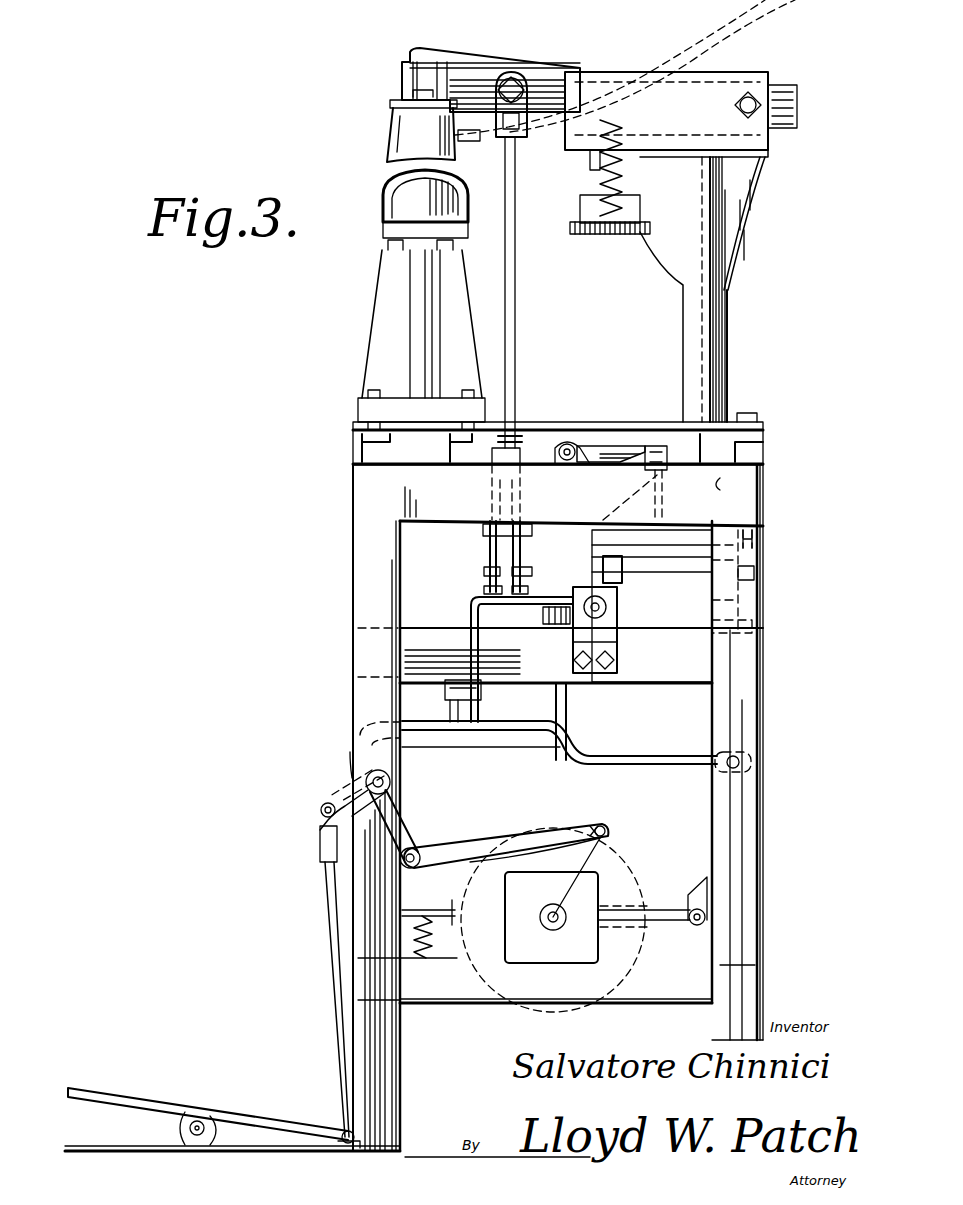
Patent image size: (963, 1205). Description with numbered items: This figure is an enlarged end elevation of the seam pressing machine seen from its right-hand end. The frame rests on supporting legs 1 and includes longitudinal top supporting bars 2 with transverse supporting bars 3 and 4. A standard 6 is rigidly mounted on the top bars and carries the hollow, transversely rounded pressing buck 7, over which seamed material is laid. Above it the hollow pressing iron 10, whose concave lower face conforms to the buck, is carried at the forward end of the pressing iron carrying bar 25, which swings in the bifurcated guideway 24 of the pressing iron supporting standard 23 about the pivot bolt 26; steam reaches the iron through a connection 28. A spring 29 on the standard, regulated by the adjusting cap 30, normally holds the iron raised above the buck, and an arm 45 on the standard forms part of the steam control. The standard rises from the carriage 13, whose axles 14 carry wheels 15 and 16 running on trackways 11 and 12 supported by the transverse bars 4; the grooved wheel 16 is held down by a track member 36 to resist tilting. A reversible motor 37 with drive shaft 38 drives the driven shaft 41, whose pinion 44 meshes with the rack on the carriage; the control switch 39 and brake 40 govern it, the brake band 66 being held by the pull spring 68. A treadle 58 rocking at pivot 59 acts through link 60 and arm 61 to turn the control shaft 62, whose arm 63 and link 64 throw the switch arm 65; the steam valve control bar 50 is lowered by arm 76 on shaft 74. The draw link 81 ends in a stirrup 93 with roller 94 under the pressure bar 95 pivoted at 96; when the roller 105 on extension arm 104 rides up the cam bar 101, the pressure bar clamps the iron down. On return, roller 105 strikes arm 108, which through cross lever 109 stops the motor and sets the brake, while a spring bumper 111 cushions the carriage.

The supporting legs 1 is at (365, 556).
The top supporting bars 2 is at (360, 450).
The transverse supporting bar 3 is at (722, 480).
The transverse supporting bar 4 is at (688, 686).
The standard 6 is at (382, 315).
The pressing buck 7 is at (395, 195).
The pressing iron 10 is at (400, 142).
The trackway 11 is at (618, 630).
The trackway 12 is at (757, 620).
The carriage 13 is at (690, 540).
The axles 14 is at (676, 570).
The carrying wheel 15 is at (622, 582).
The carrying wheel 16 is at (757, 568).
The pressing iron supporting standard 23 is at (718, 322).
The guideway 24 is at (752, 162).
The pressing iron carrying bar 25 is at (786, 103).
The pivot bolt 26 is at (742, 92).
The steam connection 28 is at (472, 142).
The spring 29 is at (582, 168).
The adjusting cap 30 is at (585, 236).
The track member 36 is at (757, 536).
The motor 37 is at (638, 944).
The drive shaft 38 is at (565, 912).
The control switch 39 is at (510, 938).
The brake 40 is at (665, 906).
The driven shaft 41 is at (566, 712).
The pinion 44 is at (543, 616).
The arm 45 is at (470, 58).
The steam valve control bar 50 is at (658, 446).
The treadle 58 is at (172, 1108).
The treadle pivot 59 is at (186, 1130).
The link 60 is at (336, 956).
The arm 61 is at (320, 802).
The control shaft 62 is at (368, 776).
The arm 63 is at (412, 830).
The link 64 is at (500, 850).
The switch arm 65 is at (606, 838).
The brake band 66 is at (448, 910).
The pull spring 68 is at (436, 962).
The shaft 74 is at (562, 440).
The arm 76 is at (605, 446).
The draw link 81 is at (517, 318).
The stirrup 93 is at (530, 572).
The roller 94 is at (488, 572).
The pressure bar 95 is at (492, 545).
The pivot 96 is at (524, 545).
The cam bar 101 is at (350, 790).
The extension arm 104 is at (471, 608).
The roller 105 is at (450, 695).
The arm 108 is at (460, 706).
The cross lever 109 is at (620, 762).
The spring bumper 111 is at (612, 643).